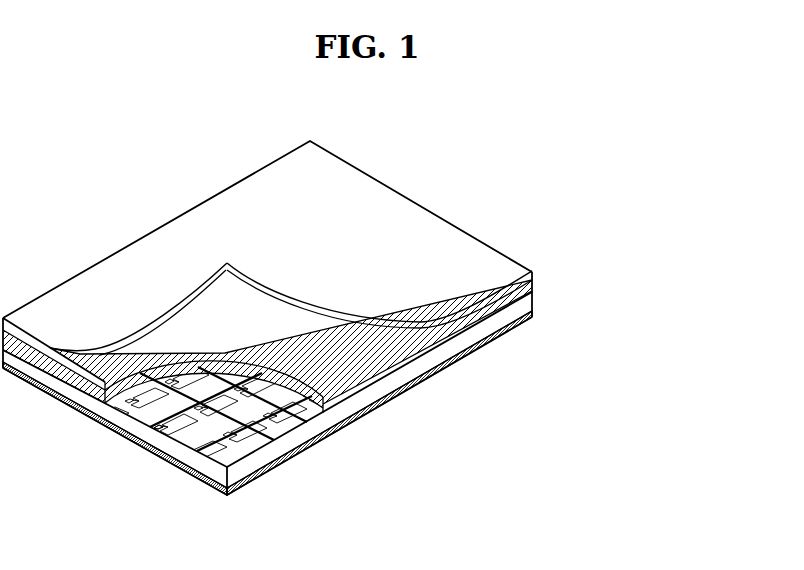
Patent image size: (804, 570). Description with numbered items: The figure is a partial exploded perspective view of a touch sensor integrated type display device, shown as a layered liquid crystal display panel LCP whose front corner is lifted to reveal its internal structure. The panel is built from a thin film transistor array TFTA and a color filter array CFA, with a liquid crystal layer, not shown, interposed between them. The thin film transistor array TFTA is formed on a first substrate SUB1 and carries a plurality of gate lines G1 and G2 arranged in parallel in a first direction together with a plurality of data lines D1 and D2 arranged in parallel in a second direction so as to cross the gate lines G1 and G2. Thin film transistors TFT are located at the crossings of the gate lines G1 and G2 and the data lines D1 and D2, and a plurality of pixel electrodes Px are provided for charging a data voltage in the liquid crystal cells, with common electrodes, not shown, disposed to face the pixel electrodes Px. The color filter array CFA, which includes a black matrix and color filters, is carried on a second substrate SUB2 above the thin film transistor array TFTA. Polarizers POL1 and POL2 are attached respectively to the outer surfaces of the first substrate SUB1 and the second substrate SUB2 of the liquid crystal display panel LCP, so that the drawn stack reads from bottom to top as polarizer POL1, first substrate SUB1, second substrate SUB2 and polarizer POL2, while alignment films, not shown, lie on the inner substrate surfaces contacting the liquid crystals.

The liquid crystal display panel LCP is at (366, 329).
The color filter array CFA is at (336, 277).
The thin film transistor array TFTA is at (341, 404).
The polarizer POL2 is at (533, 274).
The second substrate SUB2 is at (534, 285).
The first substrate SUB1 is at (533, 305).
The polarizer POL1 is at (533, 318).
The gate line G1 is at (276, 443).
The gate line G2 is at (309, 425).
The data line D1 is at (195, 453).
The data line D2 is at (148, 430).
The pixel electrode Px is at (205, 458).
The thin film transistor TFT is at (134, 422).